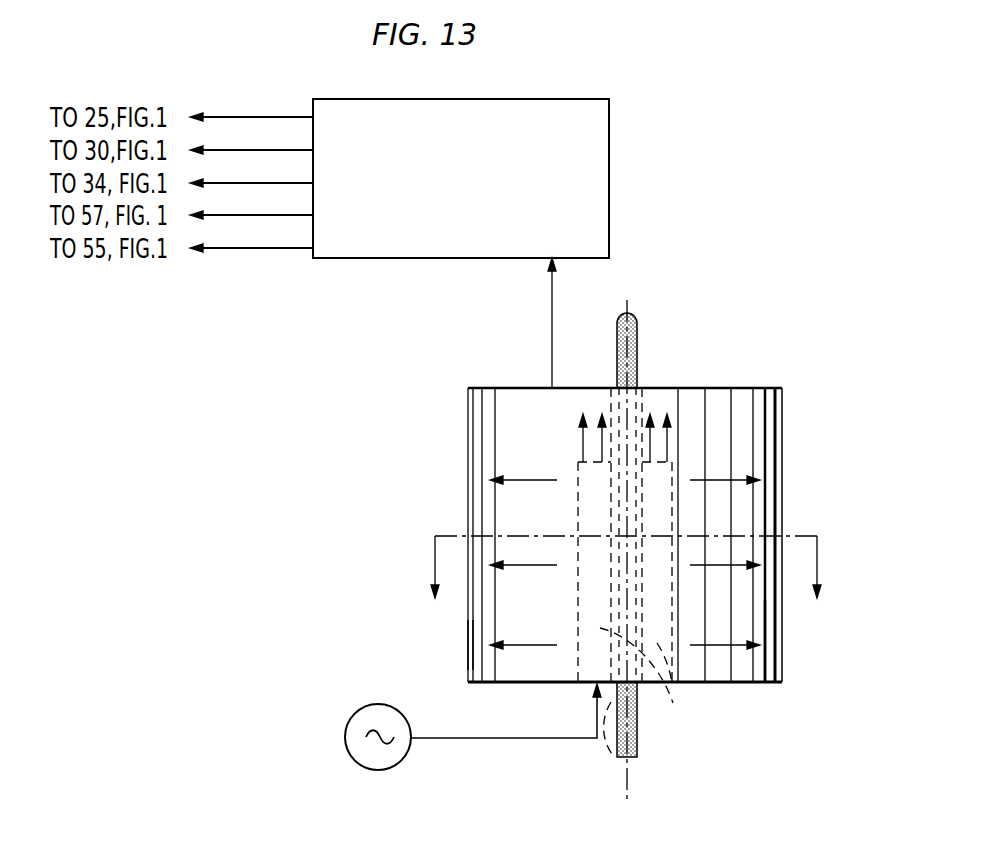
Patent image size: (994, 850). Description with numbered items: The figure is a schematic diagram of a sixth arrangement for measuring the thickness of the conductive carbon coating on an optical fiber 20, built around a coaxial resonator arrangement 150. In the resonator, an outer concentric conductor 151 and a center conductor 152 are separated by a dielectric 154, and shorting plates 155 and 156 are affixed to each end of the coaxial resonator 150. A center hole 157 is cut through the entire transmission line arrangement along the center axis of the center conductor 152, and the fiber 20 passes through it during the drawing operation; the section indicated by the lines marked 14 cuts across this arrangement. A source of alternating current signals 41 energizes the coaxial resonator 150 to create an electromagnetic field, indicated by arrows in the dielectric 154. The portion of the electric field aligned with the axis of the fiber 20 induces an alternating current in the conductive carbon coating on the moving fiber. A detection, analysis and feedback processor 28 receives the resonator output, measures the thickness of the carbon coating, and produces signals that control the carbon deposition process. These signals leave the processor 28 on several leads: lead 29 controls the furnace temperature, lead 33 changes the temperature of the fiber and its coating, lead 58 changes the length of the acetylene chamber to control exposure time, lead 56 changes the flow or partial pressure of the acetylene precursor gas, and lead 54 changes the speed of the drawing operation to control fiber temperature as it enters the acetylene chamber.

The detection, analysis and feedback processor 28 is at (547, 99).
The lead 29 is at (230, 116).
The lead 33 is at (250, 150).
The lead 58 is at (261, 183).
The lead 56 is at (263, 215).
The lead 54 is at (275, 249).
The coaxial resonator arrangement 150 is at (739, 331).
The shorting plate 156 is at (520, 388).
The shorting plate 155 is at (512, 683).
The dielectric 154 is at (517, 623).
The outer concentric conductor 151 is at (750, 663).
The center conductor 152 is at (684, 705).
The center hole 157 is at (612, 748).
The optical fiber 20 is at (637, 730).
The source of alternating current signals 41 is at (397, 758).
The section line 14 is at (629, 588).